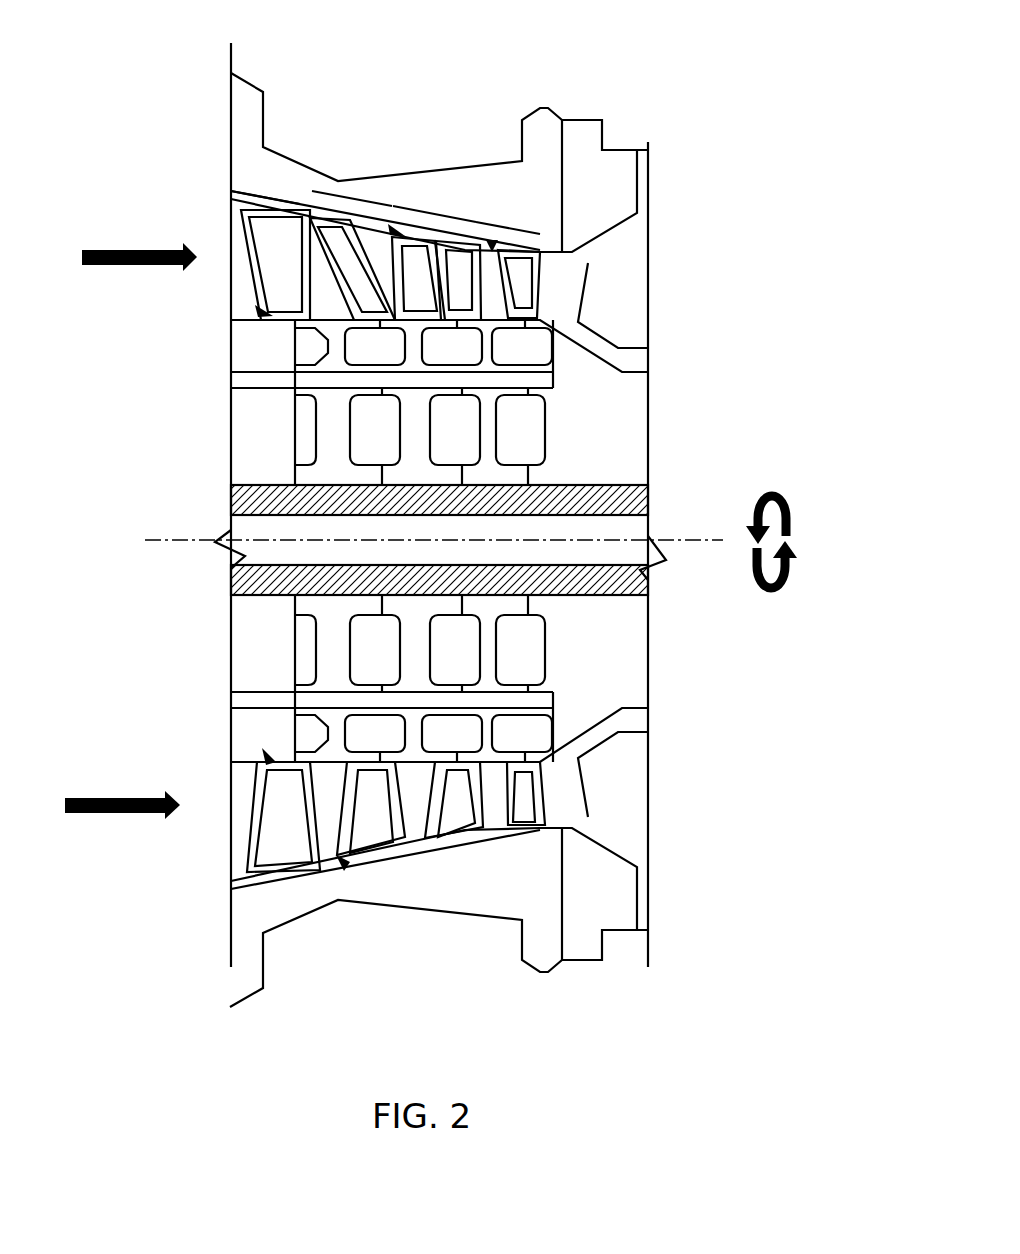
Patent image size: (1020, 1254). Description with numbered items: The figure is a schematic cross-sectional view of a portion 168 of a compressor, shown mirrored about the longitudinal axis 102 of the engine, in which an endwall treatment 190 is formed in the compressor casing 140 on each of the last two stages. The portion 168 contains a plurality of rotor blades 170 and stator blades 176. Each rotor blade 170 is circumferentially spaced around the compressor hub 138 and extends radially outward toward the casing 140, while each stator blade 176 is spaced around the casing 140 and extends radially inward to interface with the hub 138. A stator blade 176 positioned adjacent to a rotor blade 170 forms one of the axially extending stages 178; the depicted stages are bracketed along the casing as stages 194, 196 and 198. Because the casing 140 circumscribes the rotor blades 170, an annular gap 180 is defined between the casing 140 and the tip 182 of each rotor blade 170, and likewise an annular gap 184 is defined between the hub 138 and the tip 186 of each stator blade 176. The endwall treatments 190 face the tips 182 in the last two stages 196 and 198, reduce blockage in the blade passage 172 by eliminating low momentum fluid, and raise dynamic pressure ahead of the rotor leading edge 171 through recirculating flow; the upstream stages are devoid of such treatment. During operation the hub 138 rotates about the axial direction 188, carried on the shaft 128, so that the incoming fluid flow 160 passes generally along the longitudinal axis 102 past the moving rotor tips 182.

The longitudinal axis 102 is at (688, 536).
The shaft 128 is at (230, 505).
The compressor hub 138 is at (618, 423).
The compressor casing 140 is at (257, 193).
The airflow 160 is at (132, 266).
The portion of the compressor 168 is at (183, 32).
The rotor blades 170 is at (383, 318).
The rotor leading edge 171 is at (485, 320).
The blade passage 172 is at (505, 248).
The stator blades 176 is at (336, 205).
The axially extending stages 178 is at (308, 58).
The annular gap 180 is at (357, 215).
The tip of rotor blade 182 is at (313, 205).
The annular gap 184 is at (262, 314).
The tip of stator blade 186 is at (287, 328).
The axial direction 188 is at (768, 495).
The endwall treatment 190 is at (398, 230).
The compressor stage 194 is at (392, 78).
The compressor stage 196 is at (476, 98).
The compressor stage 198 is at (540, 55).